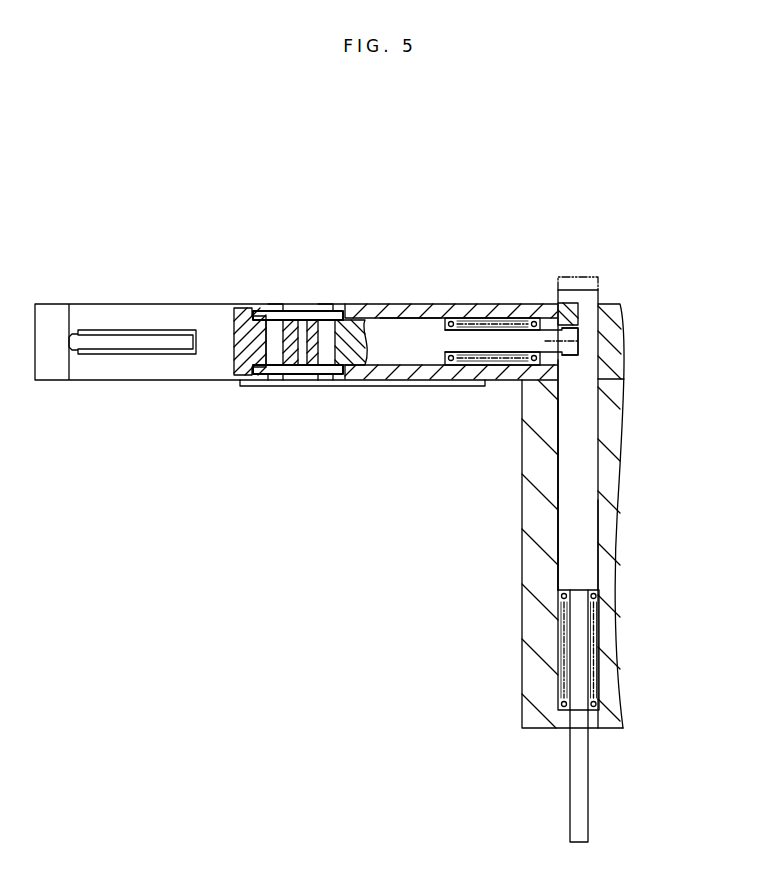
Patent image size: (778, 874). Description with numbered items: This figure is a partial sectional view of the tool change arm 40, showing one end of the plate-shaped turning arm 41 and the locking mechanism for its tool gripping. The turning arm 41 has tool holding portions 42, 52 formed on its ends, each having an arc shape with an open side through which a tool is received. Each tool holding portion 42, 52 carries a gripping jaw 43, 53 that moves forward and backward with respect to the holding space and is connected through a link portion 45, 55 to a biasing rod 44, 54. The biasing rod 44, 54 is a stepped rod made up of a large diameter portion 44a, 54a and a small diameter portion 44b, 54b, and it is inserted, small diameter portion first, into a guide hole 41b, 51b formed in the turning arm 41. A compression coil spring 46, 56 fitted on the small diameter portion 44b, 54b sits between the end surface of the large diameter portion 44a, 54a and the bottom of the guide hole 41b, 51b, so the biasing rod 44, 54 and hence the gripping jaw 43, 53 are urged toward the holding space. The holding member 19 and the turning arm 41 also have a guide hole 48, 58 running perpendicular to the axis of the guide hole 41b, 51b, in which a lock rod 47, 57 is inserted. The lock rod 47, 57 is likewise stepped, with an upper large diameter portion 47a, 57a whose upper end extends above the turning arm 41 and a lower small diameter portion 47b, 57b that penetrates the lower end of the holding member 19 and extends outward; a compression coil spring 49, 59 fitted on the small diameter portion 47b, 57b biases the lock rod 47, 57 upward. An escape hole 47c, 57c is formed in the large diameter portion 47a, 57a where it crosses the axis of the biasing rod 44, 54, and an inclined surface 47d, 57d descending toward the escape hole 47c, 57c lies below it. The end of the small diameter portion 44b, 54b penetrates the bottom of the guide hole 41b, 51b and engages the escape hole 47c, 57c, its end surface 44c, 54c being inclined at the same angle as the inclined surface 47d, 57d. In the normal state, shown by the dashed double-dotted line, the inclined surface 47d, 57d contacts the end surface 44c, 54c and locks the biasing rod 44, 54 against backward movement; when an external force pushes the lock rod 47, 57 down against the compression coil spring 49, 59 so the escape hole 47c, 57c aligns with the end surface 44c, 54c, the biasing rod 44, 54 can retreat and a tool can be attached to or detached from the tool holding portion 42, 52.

The holding member 19 is at (528, 589).
The tool change arm 40 is at (294, 443).
The turning arm 41 is at (370, 381).
The guide hole 41b is at (417, 350).
The tool holding portion 42 is at (141, 413).
The gripping jaw 43 is at (240, 308).
The biasing rod 44 is at (380, 308).
The large diameter portion 44a is at (415, 322).
The small diameter portion 44b is at (518, 335).
The end surface 44c is at (573, 322).
The link portion 45 is at (299, 299).
The compression coil spring 46 is at (450, 319).
The lock rod 47 is at (592, 296).
The large diameter portion 47a is at (598, 568).
The small diameter portion 47b is at (577, 810).
The escape hole 47c is at (577, 353).
The inclined surface 47d is at (556, 361).
The guide hole 48 is at (566, 508).
The compression coil spring 49 is at (563, 705).
The guide hole 51b is at (410, 393).
The tool holding portion 52 is at (296, 406).
The gripping jaw 53 is at (237, 294).
The biasing rod 54 is at (446, 300).
The large diameter portion 54a is at (410, 282).
The small diameter portion 54b is at (511, 298).
The end surface 54c is at (547, 255).
The link portion 55 is at (298, 291).
The compression coil spring 56 is at (492, 293).
The lock rod 57 is at (589, 461).
The large diameter portion 57a is at (667, 545).
The small diameter portion 57b is at (513, 776).
The escape hole 57c is at (646, 333).
The inclined surface 57d is at (639, 400).
The guide hole 58 is at (507, 495).
The compression coil spring 59 is at (522, 650).